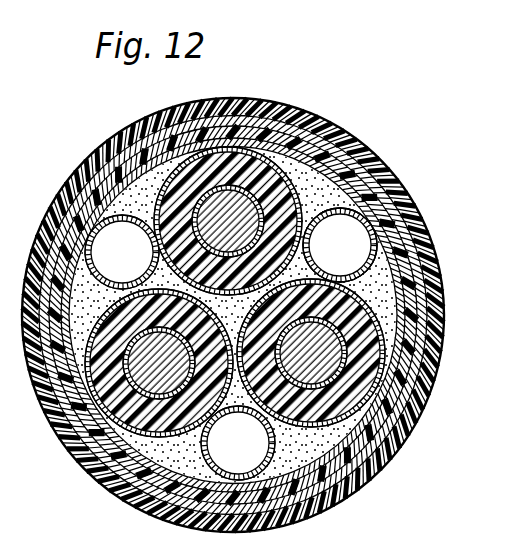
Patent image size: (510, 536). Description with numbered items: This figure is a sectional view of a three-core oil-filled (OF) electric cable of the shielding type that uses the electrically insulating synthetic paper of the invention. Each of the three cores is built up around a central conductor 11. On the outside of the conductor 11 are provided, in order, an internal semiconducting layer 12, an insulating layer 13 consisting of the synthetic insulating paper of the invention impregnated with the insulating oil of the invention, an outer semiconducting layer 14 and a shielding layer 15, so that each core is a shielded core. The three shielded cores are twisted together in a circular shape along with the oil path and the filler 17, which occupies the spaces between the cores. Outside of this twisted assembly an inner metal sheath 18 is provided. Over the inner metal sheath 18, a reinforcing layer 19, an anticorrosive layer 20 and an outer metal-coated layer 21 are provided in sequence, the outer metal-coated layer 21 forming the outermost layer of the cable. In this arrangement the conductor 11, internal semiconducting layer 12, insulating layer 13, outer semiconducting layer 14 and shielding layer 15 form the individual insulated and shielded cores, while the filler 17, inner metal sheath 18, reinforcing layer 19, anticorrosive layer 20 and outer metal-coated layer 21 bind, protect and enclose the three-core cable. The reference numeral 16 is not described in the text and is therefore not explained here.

The conductor 11 is at (235, 207).
The internal semiconducting layer 12 is at (262, 206).
The insulating layer 13 is at (283, 190).
The outer semiconducting layer 14 is at (356, 212).
The shielding layer 15 is at (305, 243).
The filler tube 16 is at (358, 266).
The filler 17 is at (388, 325).
The inner metal sheath 18 is at (393, 356).
The reinforcing layer 19 is at (396, 388).
The anticorrosive layer 20 is at (387, 420).
The outer metal-coated layer 21 is at (385, 458).